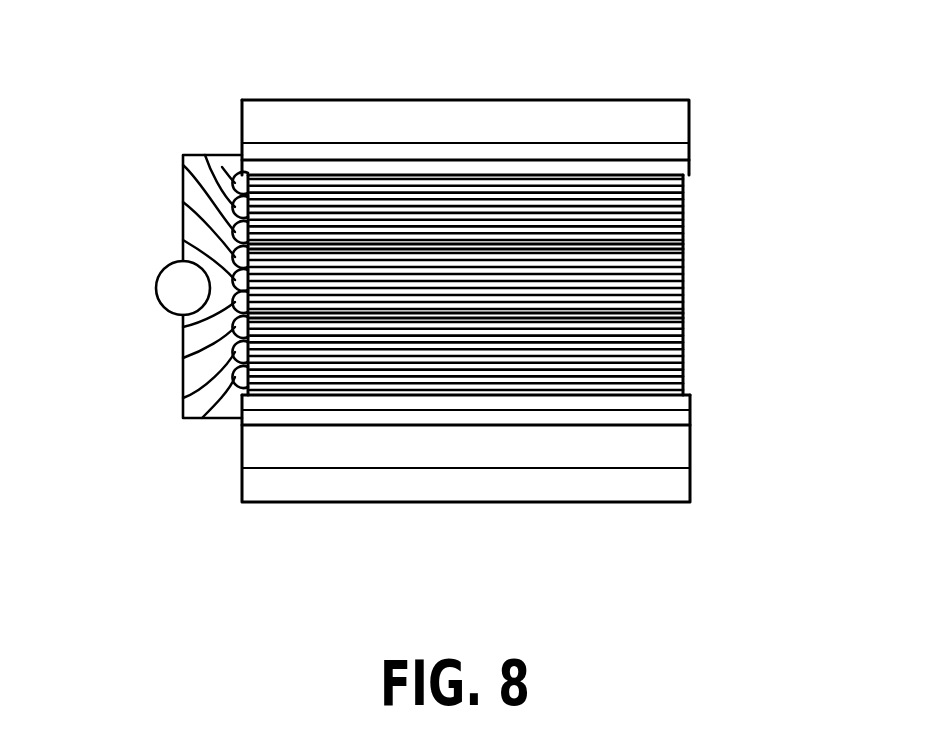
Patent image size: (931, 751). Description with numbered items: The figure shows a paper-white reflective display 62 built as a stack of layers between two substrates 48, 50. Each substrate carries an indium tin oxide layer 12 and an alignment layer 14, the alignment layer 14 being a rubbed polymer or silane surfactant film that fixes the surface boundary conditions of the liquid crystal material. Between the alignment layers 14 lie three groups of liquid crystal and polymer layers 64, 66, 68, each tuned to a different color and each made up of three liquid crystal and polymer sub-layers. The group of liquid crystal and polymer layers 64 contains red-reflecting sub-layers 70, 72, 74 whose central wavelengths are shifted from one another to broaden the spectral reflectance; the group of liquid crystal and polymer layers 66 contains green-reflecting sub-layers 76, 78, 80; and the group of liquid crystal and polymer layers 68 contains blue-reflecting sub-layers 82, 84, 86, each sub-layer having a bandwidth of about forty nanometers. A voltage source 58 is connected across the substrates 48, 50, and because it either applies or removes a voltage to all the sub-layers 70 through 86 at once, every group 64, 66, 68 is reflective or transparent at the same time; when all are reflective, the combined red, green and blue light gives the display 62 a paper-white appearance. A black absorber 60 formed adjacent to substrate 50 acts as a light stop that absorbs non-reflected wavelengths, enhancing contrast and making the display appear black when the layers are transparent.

The indium tin oxide layer 12 is at (257, 150).
The alignment layer 14 is at (683, 167).
The substrate 48 is at (683, 127).
The substrate 50 is at (682, 450).
The voltage source 58 is at (157, 282).
The black absorber 60 is at (682, 483).
The paper-white reflective display 62 is at (380, 108).
The group of liquid crystal and polymer layers 64 is at (683, 178).
The group of liquid crystal and polymer layers 66 is at (683, 250).
The group of liquid crystal and polymer layers 68 is at (683, 319).
The liquid crystal and polymer sub-layer 70 is at (222, 167).
The liquid crystal and polymer sub-layer 72 is at (205, 155).
The liquid crystal and polymer sub-layer 74 is at (183, 166).
The liquid crystal and polymer sub-layer 76 is at (183, 202).
The liquid crystal and polymer sub-layer 78 is at (183, 240).
The liquid crystal and polymer sub-layer 80 is at (183, 327).
The liquid crystal and polymer sub-layer 82 is at (183, 358).
The liquid crystal and polymer sub-layer 84 is at (183, 398).
The liquid crystal and polymer sub-layer 86 is at (202, 418).